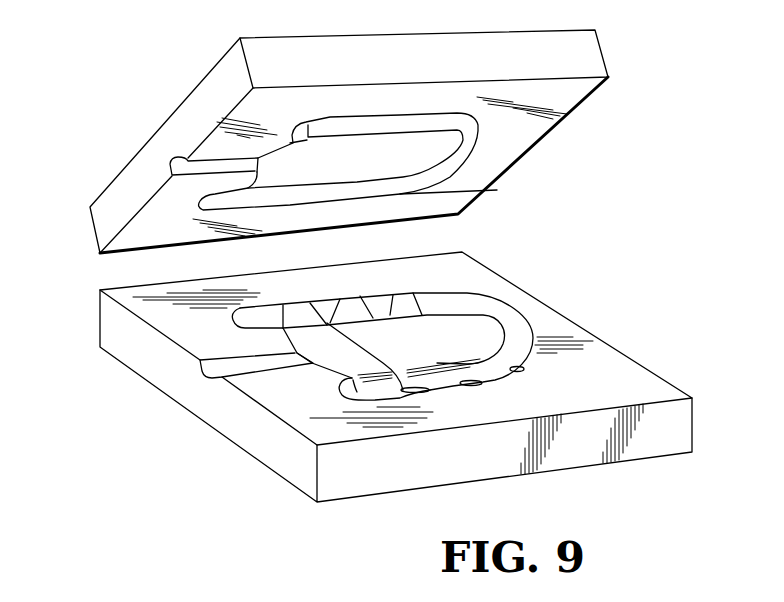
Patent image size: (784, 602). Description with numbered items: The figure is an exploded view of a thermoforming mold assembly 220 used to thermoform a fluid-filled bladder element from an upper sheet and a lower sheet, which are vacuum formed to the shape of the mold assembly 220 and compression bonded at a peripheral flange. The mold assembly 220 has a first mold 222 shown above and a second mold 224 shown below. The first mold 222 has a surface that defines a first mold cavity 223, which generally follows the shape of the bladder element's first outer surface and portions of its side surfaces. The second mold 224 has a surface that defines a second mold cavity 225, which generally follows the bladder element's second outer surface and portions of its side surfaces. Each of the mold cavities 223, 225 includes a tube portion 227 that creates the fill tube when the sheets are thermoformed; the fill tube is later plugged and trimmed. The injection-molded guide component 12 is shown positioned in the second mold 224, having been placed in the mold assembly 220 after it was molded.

The mold assembly 220 is at (76, 20).
The first mold 222 is at (176, 117).
The first mold cavity 223 is at (363, 158).
The second mold 224 is at (263, 432).
The second mold cavity 225 is at (372, 368).
The tube portion 227 is at (218, 167).
The guide component 12 is at (424, 342).